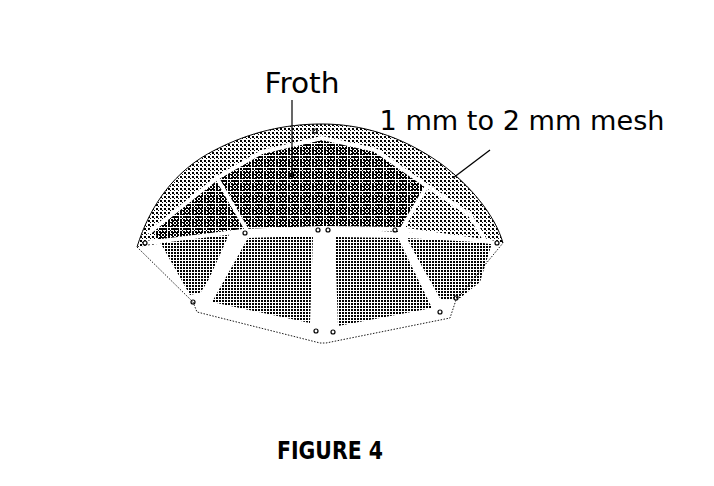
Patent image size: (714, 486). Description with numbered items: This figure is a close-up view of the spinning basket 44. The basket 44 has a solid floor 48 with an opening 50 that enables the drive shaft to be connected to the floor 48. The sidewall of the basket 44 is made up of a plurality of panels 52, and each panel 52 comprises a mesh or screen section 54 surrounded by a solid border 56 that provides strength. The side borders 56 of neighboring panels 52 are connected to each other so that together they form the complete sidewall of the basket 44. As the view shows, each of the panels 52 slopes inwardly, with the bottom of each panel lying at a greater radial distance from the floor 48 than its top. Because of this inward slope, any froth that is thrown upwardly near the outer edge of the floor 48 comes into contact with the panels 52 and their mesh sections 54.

The spinning basket 44 is at (367, 93).
The solid floor 48 is at (267, 197).
The opening 50 is at (322, 236).
The panels 52 is at (268, 305).
The mesh or screen section 54 is at (457, 243).
The solid border 56 is at (468, 293).